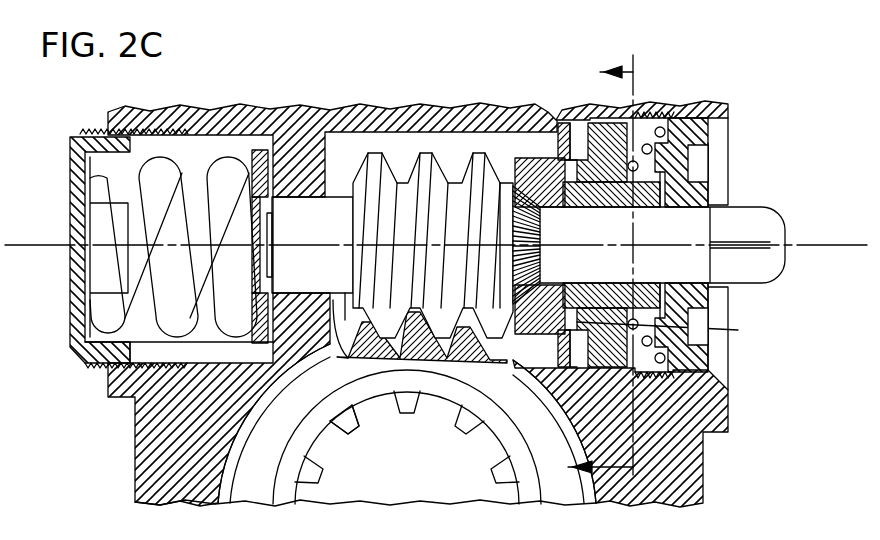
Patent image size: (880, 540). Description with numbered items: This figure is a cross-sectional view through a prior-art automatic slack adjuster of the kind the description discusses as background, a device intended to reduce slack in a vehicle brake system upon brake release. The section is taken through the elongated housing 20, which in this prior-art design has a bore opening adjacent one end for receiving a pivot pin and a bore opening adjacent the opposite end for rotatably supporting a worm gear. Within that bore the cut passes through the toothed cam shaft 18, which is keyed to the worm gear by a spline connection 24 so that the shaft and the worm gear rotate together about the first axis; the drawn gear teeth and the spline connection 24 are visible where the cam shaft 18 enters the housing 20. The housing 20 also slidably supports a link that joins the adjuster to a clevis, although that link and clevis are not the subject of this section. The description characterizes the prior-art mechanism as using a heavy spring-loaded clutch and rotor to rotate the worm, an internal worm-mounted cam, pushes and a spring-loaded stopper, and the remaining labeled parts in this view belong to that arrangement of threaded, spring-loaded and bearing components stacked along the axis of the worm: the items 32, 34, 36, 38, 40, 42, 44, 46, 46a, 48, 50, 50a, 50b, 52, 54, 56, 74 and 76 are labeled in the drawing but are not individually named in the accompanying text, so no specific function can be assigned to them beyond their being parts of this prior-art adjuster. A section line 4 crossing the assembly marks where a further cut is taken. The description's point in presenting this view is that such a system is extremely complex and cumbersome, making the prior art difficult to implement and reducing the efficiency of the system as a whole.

The cam shaft 18 is at (421, 503).
The housing 20 is at (135, 467).
The spline connection 24 is at (349, 422).
The bore 32 is at (342, 147).
The axis 34 is at (798, 245).
The shaft 36 is at (740, 213).
The shaft end 38 is at (328, 233).
The worm 40 is at (374, 157).
The spring 42 is at (107, 313).
The bearing 44 is at (606, 150).
The bearing support 46 is at (543, 343).
The support flange 46a is at (566, 125).
The bearing race 48 is at (647, 197).
The retainer 50 is at (578, 132).
The retainer inner end 50a is at (572, 168).
The retainer outer end 50b is at (680, 333).
The ball 52 is at (661, 128).
The nut 54 is at (702, 128).
The collar 56 is at (518, 305).
The stop 74 is at (333, 330).
The housing wall 76 is at (496, 122).
The section line 4- 4 is at (591, 268).